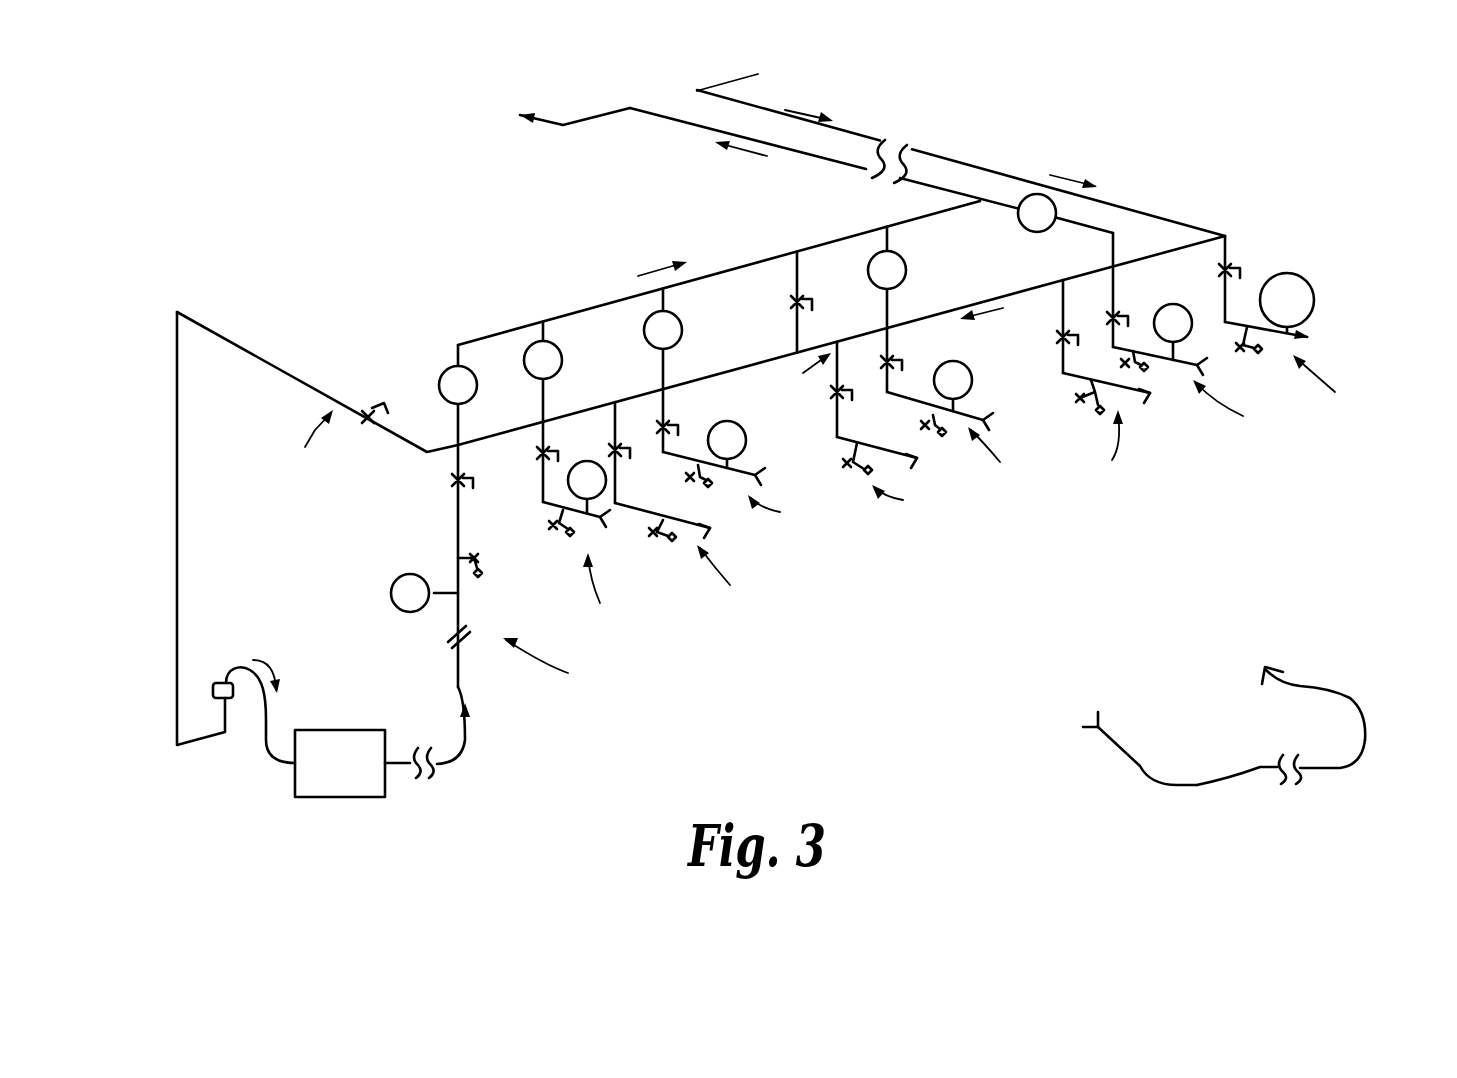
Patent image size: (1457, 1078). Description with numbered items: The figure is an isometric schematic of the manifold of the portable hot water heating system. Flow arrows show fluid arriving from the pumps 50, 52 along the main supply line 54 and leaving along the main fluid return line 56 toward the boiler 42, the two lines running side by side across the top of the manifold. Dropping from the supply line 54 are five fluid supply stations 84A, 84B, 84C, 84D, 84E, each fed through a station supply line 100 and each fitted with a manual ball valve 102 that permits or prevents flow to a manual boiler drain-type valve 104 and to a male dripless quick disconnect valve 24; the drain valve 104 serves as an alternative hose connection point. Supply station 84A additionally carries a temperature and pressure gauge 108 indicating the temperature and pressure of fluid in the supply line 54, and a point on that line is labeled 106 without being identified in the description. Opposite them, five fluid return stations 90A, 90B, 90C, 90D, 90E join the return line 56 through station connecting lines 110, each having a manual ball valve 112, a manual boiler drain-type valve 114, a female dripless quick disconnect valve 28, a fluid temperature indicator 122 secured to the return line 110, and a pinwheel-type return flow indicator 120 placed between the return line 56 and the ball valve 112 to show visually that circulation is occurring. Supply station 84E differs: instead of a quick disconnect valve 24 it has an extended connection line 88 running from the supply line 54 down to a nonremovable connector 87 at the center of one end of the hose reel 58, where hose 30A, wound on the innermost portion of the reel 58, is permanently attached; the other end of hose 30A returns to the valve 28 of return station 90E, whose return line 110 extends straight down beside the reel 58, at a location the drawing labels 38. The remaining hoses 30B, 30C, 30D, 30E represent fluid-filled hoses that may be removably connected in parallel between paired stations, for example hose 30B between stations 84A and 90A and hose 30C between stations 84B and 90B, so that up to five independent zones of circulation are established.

The male quick disconnect valve 24 is at (711, 529).
The female quick disconnect valve 28 is at (466, 630).
The permanently connected hose 30A is at (278, 772).
The fluid-filled hose 30B is at (1200, 786).
The fluid-filled hose 30C is at (1249, 770).
The fluid-filled hose 30D is at (1332, 754).
The fluid-filled hose 30E is at (1313, 703).
The hose connection 38 is at (465, 642).
The boiler 42 is at (476, 95).
The pump 50 is at (871, 69).
The pump 52 is at (698, 90).
The fluid supply line 54 is at (972, 167).
The main fluid return line 56 is at (677, 121).
The hose reel 58 is at (313, 730).
The fluid supply station 84A is at (1341, 389).
The fluid supply station 84B is at (1117, 452).
The fluid supply station 84C is at (915, 506).
The fluid supply station 84D is at (741, 579).
The fluid supply station 84E is at (302, 448).
The connector 87 is at (235, 697).
The extended connection line 88 is at (177, 523).
The fluid return station 90A is at (1243, 411).
The fluid return station 90B is at (1009, 457).
The fluid return station 90C is at (789, 518).
The fluid return station 90D is at (616, 593).
The fluid return station 90E is at (560, 666).
The station supply line 100 is at (427, 453).
The manual ball valve 102 is at (380, 407).
The manual boiler drain-type valve 104 is at (656, 536).
The supply header tee 106 is at (798, 374).
The temperature and pressure gauge 108 is at (1313, 278).
The station connecting line 110 is at (458, 345).
The manual ball valve 112 is at (463, 477).
The manual boiler drain-type valve 114 is at (553, 528).
The return fluid flow indicator 120 is at (472, 397).
The fluid temperature indicator 122 is at (743, 426).